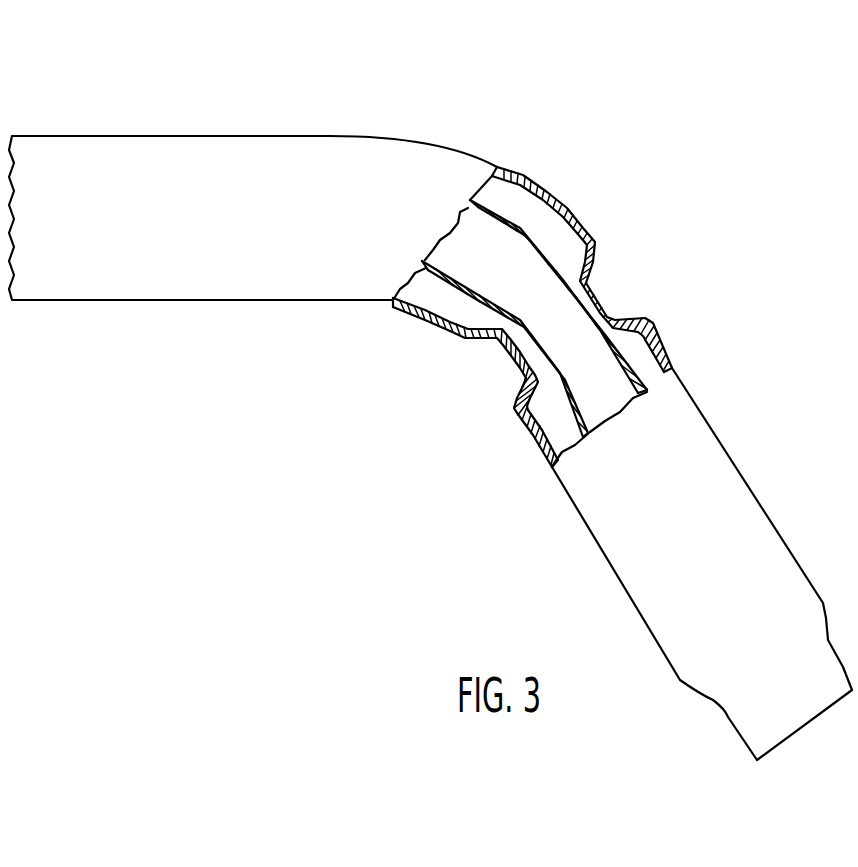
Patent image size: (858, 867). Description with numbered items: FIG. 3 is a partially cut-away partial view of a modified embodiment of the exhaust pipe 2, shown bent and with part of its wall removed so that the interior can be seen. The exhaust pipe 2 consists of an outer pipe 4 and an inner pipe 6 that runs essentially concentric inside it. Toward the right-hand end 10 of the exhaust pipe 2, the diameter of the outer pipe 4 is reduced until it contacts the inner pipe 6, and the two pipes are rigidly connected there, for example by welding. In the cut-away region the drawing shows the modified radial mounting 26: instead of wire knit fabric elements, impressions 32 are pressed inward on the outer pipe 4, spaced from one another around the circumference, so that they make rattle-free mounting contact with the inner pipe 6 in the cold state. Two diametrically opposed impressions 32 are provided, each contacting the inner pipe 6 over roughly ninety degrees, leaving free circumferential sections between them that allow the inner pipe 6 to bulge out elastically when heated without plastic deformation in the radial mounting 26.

The exhaust pipe 2 is at (300, 126).
The outer pipe 4 is at (538, 190).
The inner pipe 6 is at (521, 224).
The impressions 32 is at (605, 292).
The radial mounting 26 is at (491, 367).
The end of the exhaust pipe 10 is at (713, 733).